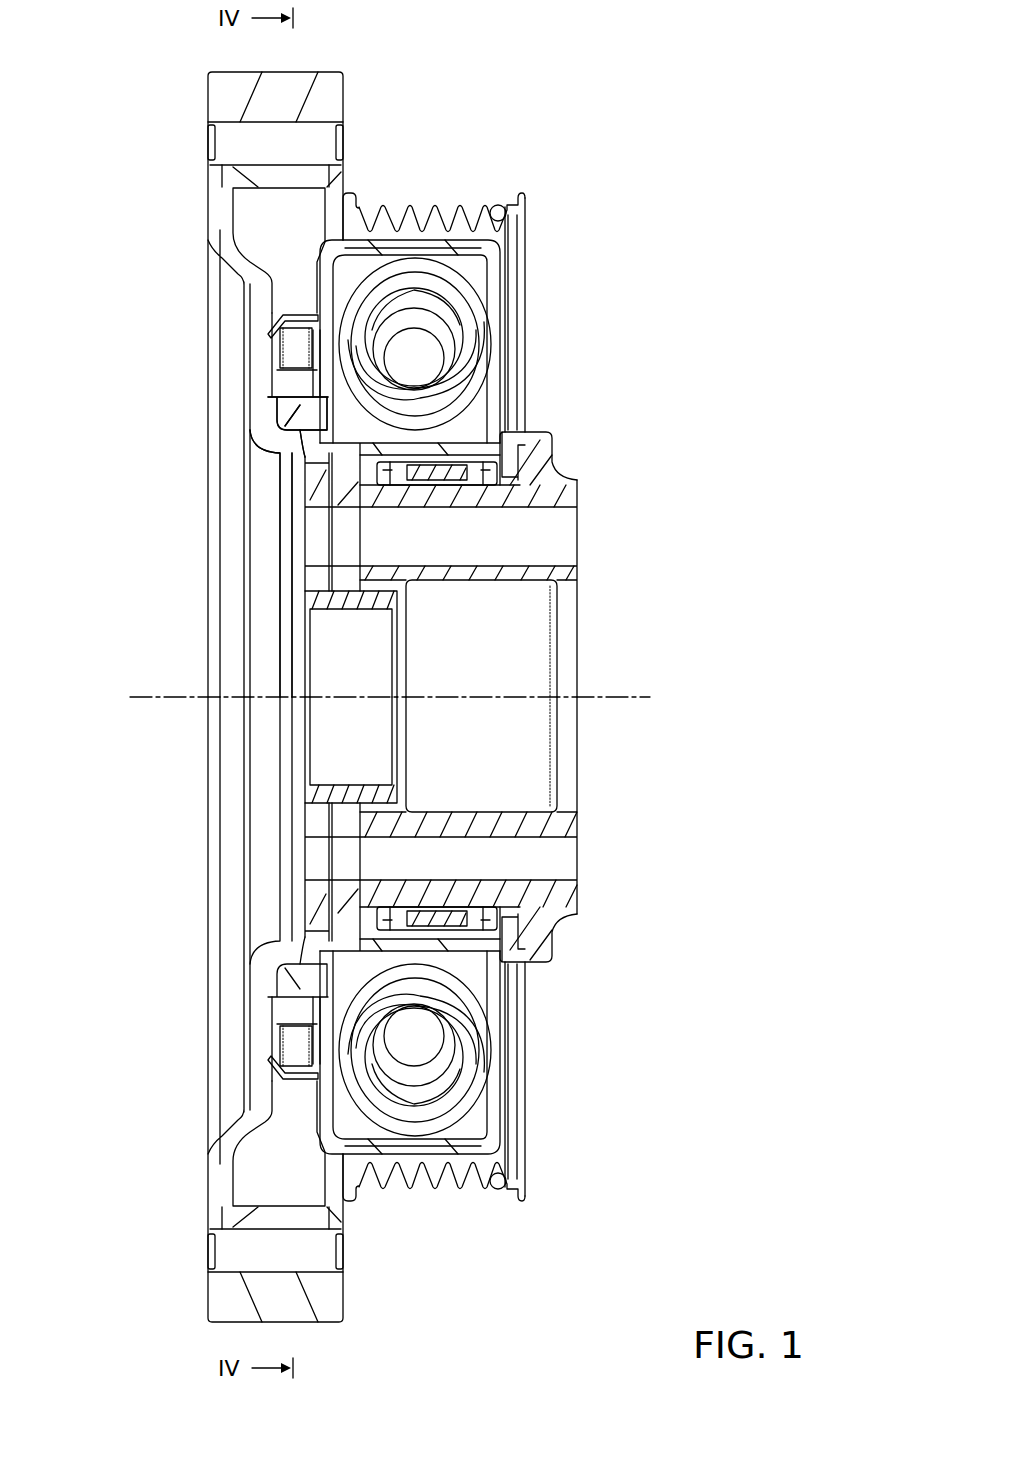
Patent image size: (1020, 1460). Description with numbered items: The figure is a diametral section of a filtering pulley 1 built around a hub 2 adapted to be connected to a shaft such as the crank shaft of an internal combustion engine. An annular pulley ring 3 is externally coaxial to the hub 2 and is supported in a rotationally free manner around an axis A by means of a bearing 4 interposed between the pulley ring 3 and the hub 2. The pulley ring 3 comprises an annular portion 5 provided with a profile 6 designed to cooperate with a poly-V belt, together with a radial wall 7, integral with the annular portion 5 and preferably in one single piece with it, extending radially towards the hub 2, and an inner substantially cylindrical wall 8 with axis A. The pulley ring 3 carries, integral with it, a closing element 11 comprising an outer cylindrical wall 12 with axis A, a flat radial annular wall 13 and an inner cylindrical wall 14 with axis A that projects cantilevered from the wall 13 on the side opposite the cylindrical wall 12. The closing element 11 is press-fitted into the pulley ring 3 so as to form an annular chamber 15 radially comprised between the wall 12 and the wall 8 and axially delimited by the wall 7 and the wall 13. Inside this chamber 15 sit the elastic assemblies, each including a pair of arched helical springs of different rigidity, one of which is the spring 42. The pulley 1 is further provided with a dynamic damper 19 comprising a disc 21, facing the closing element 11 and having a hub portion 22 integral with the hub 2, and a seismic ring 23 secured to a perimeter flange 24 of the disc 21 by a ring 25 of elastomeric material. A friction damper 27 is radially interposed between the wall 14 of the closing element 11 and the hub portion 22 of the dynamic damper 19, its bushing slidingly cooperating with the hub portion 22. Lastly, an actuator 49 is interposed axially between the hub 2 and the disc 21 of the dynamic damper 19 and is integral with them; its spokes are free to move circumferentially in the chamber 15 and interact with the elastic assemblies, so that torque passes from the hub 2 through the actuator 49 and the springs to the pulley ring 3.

The filtering pulley 1 is at (398, 688).
The hub 2 is at (567, 490).
The annular pulley ring 3 is at (532, 212).
The bearing 4 is at (542, 447).
The annular portion 5 is at (368, 217).
The profile 6 is at (456, 212).
The radial wall 7 is at (510, 320).
The inner cylindrical wall 8 is at (325, 490).
The closing element 11 is at (320, 245).
The outer cylindrical wall 12 is at (458, 250).
The flat radial annular wall 13 is at (282, 312).
The inner cylindrical wall 14 is at (270, 383).
The annular chamber 15 is at (428, 346).
The dynamic damper 19 is at (208, 1134).
The disc 21 is at (255, 1037).
The hub portion 22 is at (315, 907).
The seismic ring 23 is at (222, 82).
The perimeter flange 24 is at (233, 165).
The ring of elastomeric material 25 is at (338, 135).
The friction damper 27 is at (264, 984).
The arched helical spring 42 is at (355, 458).
The actuator 49 is at (345, 578).
The axis A is at (145, 693).